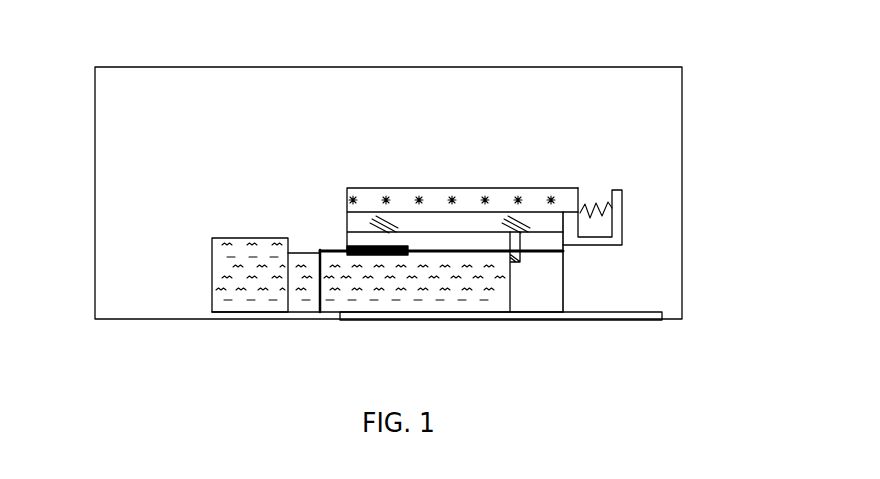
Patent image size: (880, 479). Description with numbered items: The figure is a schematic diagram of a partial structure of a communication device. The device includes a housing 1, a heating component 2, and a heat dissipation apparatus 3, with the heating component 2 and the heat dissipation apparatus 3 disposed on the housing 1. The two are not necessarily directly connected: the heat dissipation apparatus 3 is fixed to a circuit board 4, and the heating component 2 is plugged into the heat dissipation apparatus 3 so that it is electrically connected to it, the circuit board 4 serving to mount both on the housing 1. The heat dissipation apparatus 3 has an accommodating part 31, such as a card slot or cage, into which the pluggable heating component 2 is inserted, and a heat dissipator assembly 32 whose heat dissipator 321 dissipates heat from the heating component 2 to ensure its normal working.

The housing 1 is at (572, 66).
The heating component 2 is at (232, 257).
The heat dissipation apparatus 3 is at (385, 188).
The accommodating part 31 is at (563, 286).
The heat dissipator 321 is at (566, 192).
The heat dissipator assembly 32 is at (592, 216).
The circuit board 4 is at (590, 312).